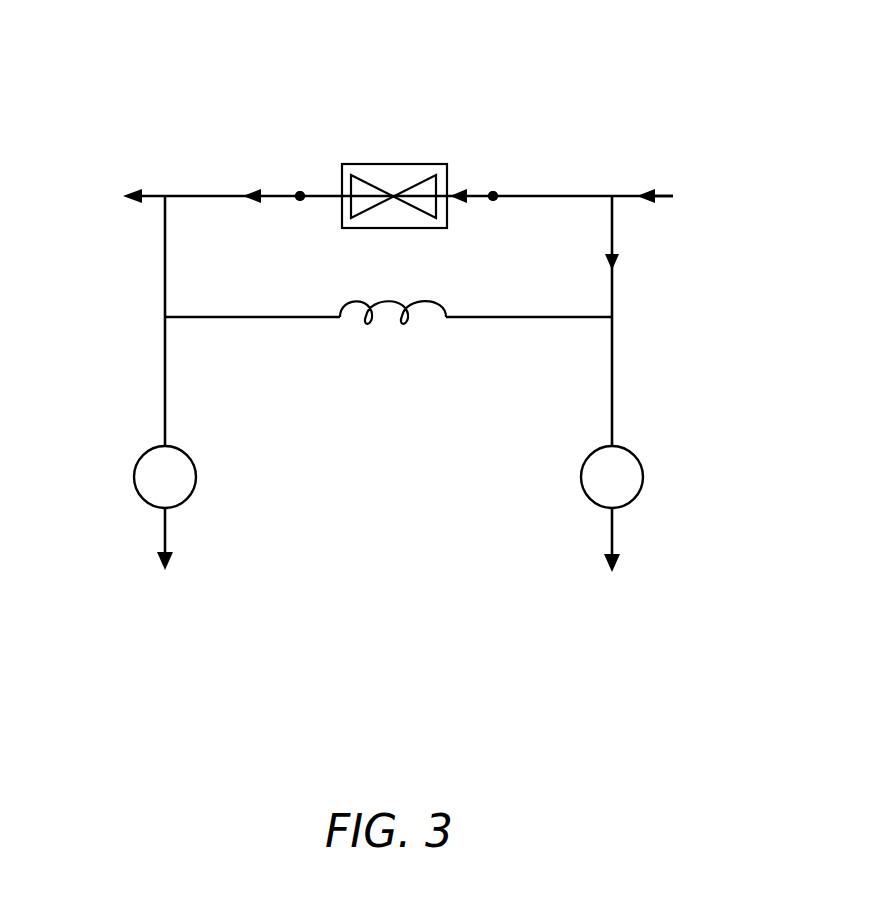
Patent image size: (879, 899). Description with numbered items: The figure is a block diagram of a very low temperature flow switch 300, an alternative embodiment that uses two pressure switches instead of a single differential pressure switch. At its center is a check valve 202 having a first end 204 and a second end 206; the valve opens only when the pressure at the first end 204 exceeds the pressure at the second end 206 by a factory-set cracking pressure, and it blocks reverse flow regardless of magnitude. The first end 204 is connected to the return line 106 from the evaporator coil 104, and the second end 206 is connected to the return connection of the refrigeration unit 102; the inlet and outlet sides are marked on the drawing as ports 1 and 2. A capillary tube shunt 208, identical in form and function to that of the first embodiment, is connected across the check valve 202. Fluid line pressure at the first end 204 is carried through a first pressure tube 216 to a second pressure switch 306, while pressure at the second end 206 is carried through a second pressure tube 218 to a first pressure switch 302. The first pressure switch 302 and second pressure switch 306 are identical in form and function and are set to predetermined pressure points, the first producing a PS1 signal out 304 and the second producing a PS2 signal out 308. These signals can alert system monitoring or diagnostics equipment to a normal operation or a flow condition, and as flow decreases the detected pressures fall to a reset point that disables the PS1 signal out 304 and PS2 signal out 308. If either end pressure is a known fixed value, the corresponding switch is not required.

The very low temperature flow switch 300 is at (596, 84).
The check valve 202 is at (378, 163).
The first end 204 is at (448, 173).
The second end 206 is at (342, 188).
The port 1 junction 1 is at (494, 208).
The port 2 junction 2 is at (301, 208).
The return line 106 is at (660, 196).
The evaporator coil 104 is at (752, 208).
The refrigeration unit 102 is at (84, 183).
The first pressure tube 216 is at (613, 230).
The second pressure tube 218 is at (165, 230).
The capillary tube shunt 208 is at (390, 320).
The first pressure switch 302 is at (195, 476).
The PS1 signal out 304 is at (164, 554).
The second pressure switch 306 is at (643, 472).
The PS2 signal out 308 is at (611, 555).